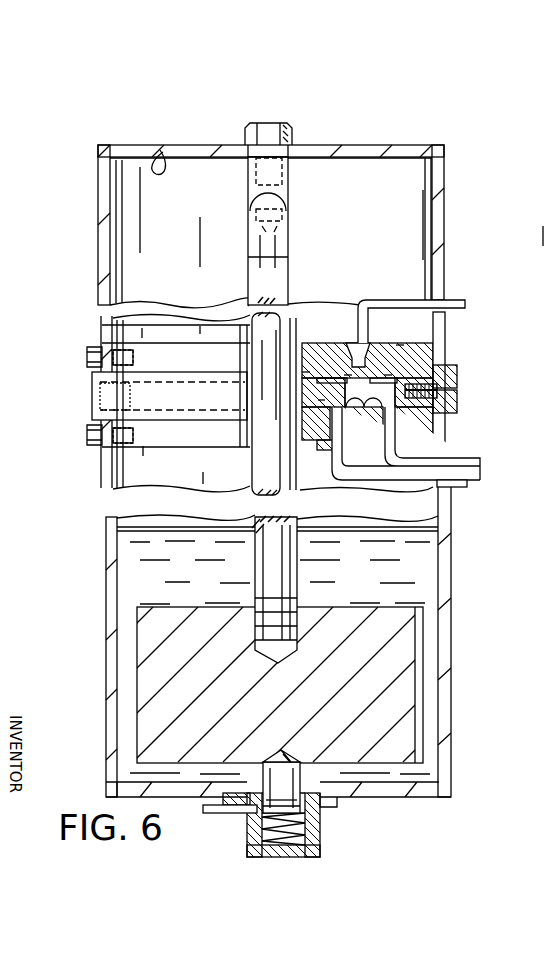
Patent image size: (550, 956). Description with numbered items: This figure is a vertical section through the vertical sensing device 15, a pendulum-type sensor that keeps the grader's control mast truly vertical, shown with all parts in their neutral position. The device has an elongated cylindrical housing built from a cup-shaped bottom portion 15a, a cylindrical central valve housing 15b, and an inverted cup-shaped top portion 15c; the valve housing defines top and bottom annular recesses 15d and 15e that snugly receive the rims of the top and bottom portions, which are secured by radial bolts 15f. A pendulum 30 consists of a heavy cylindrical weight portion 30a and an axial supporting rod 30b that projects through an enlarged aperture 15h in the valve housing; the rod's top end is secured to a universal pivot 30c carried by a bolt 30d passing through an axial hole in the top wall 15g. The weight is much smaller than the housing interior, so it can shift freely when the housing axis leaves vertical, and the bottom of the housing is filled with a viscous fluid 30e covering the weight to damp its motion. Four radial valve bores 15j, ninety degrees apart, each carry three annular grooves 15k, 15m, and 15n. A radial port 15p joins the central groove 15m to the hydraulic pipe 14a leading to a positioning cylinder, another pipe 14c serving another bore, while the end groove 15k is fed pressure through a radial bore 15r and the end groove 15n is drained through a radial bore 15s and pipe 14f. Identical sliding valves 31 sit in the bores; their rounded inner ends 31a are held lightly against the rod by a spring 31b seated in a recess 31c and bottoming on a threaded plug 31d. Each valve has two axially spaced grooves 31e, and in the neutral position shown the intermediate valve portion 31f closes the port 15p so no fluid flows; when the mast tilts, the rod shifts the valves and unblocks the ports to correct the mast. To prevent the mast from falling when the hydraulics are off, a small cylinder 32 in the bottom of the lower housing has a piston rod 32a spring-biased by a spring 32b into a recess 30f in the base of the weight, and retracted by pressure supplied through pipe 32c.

The hydraulic pipe 14a is at (462, 298).
The pipe 14c is at (462, 487).
The pipe 14f is at (481, 470).
The vertical sensing device 15 is at (454, 586).
The cup-shaped bottom portion 15a is at (114, 636).
The cylindrical central valve housing 15b is at (92, 405).
The inverted cup-shaped top portion 15c is at (100, 250).
The top annular recess 15d is at (433, 352).
The bottom annular recess 15e is at (440, 431).
The radial bolts 15f is at (88, 357).
The top wall 15g is at (177, 140).
The enlarged aperture 15h is at (305, 378).
The radial valve bores 15j is at (168, 388).
The end groove 15k is at (322, 400).
The central groove 15m is at (388, 375).
The end groove 15n is at (400, 345).
The radial port 15p is at (347, 375).
The radial bore 15r is at (300, 450).
The radial bore 15s is at (414, 458).
The pendulum 30 is at (302, 568).
The cylindrical weight portion 30a is at (426, 645).
The axial supporting rod 30b is at (256, 517).
The universal pivot 30c is at (250, 207).
The bolt 30d is at (288, 131).
The viscous fluid 30e is at (365, 528).
The recess 30f is at (280, 762).
The sliding valves 31 is at (300, 425).
The inner ends 31a is at (296, 392).
The spring 31b is at (436, 380).
The recess 31c is at (446, 392).
The plug 31d is at (455, 400).
The axially spaced grooves 31e is at (352, 412).
The valve portion 31f is at (353, 372).
The small cylinder 32 is at (320, 830).
The piston rod 32a is at (282, 780).
The spring 32b is at (308, 845).
The pipe 32c is at (218, 813).